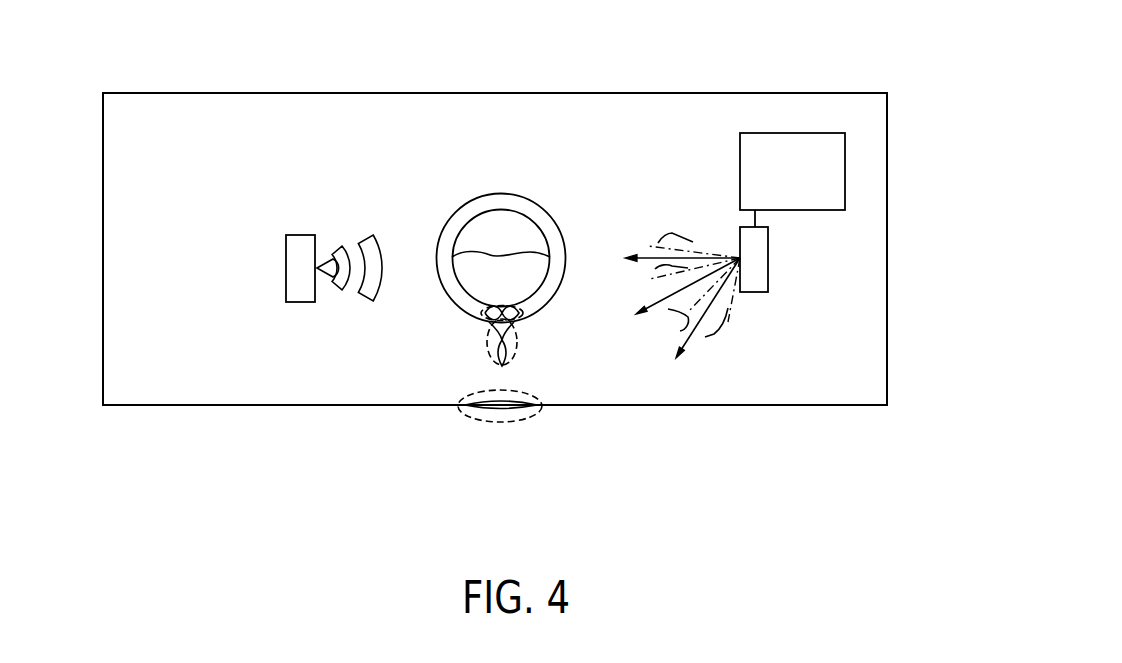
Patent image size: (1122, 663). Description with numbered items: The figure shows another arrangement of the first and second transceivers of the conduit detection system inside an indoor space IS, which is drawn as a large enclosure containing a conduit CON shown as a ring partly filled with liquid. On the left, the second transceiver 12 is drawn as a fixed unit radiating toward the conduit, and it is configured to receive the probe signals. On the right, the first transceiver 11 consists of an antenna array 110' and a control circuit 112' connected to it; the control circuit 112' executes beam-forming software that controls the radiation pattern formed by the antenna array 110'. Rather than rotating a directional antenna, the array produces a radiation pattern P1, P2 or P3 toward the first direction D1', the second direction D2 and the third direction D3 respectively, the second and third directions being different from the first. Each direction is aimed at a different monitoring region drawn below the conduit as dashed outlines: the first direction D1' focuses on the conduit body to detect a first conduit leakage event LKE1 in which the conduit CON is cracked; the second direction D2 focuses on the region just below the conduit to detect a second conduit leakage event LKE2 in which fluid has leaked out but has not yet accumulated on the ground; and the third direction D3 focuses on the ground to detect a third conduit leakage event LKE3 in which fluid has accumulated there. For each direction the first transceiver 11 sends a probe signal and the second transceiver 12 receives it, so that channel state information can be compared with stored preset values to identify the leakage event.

The indoor space IS is at (493, 93).
The conduit CON is at (500, 193).
The second transceiver 12 is at (283, 268).
The first conduit leakage event LKE1 is at (477, 317).
The second conduit leakage event LKE2 is at (483, 345).
The third conduit leakage event LKE3 is at (460, 410).
The first transceiver 11 is at (859, 231).
The antenna array 110' is at (789, 268).
The control circuit 112' is at (746, 171).
The first direction D1' is at (664, 259).
The second direction D2 is at (670, 296).
The third direction D3 is at (693, 322).
The radiation pattern P1 is at (703, 243).
The radiation pattern P2 is at (657, 268).
The radiation pattern P3 is at (728, 308).